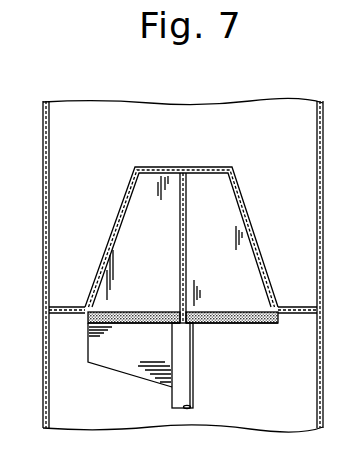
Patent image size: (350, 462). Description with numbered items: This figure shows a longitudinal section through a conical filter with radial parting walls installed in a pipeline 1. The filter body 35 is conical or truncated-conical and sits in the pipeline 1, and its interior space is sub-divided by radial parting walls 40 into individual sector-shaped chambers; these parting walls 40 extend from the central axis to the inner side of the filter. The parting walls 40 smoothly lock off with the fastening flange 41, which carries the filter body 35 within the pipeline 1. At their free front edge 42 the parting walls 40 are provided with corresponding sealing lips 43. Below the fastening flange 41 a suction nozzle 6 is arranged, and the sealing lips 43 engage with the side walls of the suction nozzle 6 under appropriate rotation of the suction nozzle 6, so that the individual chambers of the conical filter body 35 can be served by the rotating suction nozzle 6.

The pipeline 1 is at (43, 112).
The suction nozzle 6 is at (126, 366).
The conical filter body 35 is at (118, 223).
The radial parting walls 40 is at (141, 196).
The fastening flange 41 is at (66, 306).
The free front edge 42 is at (222, 312).
The sealing lips 43 is at (87, 320).